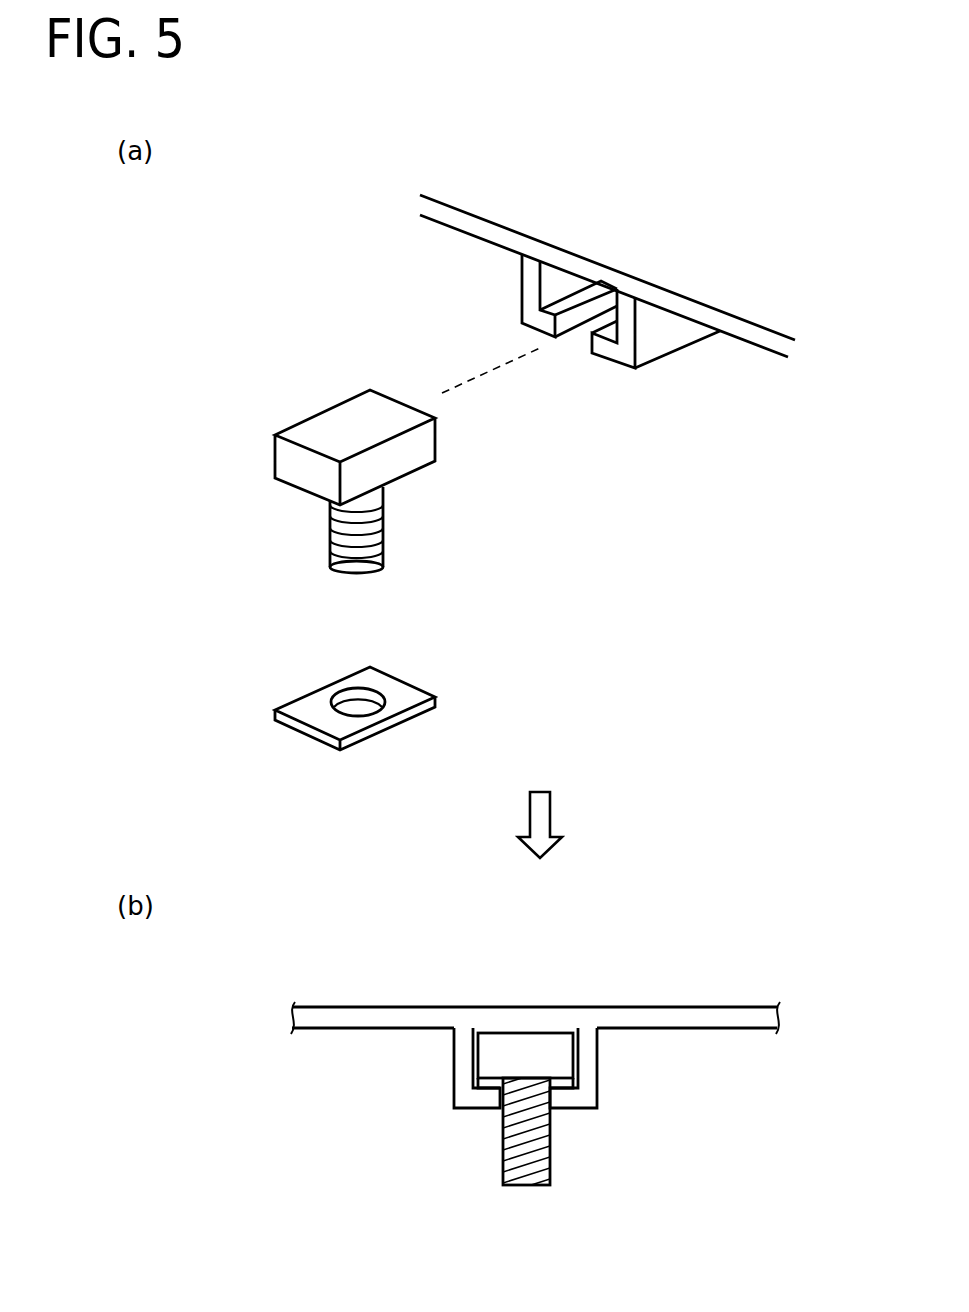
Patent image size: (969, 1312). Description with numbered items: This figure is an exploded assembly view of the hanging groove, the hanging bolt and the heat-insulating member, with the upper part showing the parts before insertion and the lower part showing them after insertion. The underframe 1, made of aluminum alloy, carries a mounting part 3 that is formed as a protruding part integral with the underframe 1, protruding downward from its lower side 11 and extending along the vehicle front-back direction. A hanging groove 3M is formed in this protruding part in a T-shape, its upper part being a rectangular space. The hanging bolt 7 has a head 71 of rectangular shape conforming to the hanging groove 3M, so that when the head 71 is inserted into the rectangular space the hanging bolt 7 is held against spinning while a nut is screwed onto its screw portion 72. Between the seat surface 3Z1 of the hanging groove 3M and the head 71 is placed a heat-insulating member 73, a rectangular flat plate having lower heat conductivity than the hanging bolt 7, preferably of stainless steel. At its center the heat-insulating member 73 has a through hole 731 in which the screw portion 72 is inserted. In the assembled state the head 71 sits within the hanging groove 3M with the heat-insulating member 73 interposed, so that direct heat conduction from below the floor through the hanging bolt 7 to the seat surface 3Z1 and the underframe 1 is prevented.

The underframe 1 is at (786, 367).
The lower surface of panel 11 is at (732, 338).
The mounting part 3 is at (618, 373).
The hanging groove 3M is at (568, 272).
The seat surface 3Z1 is at (561, 308).
The hanging bolt 7 is at (378, 770).
The head 71 is at (340, 422).
The screw portion 72 is at (345, 532).
The heat-insulating member 73 is at (410, 865).
The through hole 731 is at (337, 702).